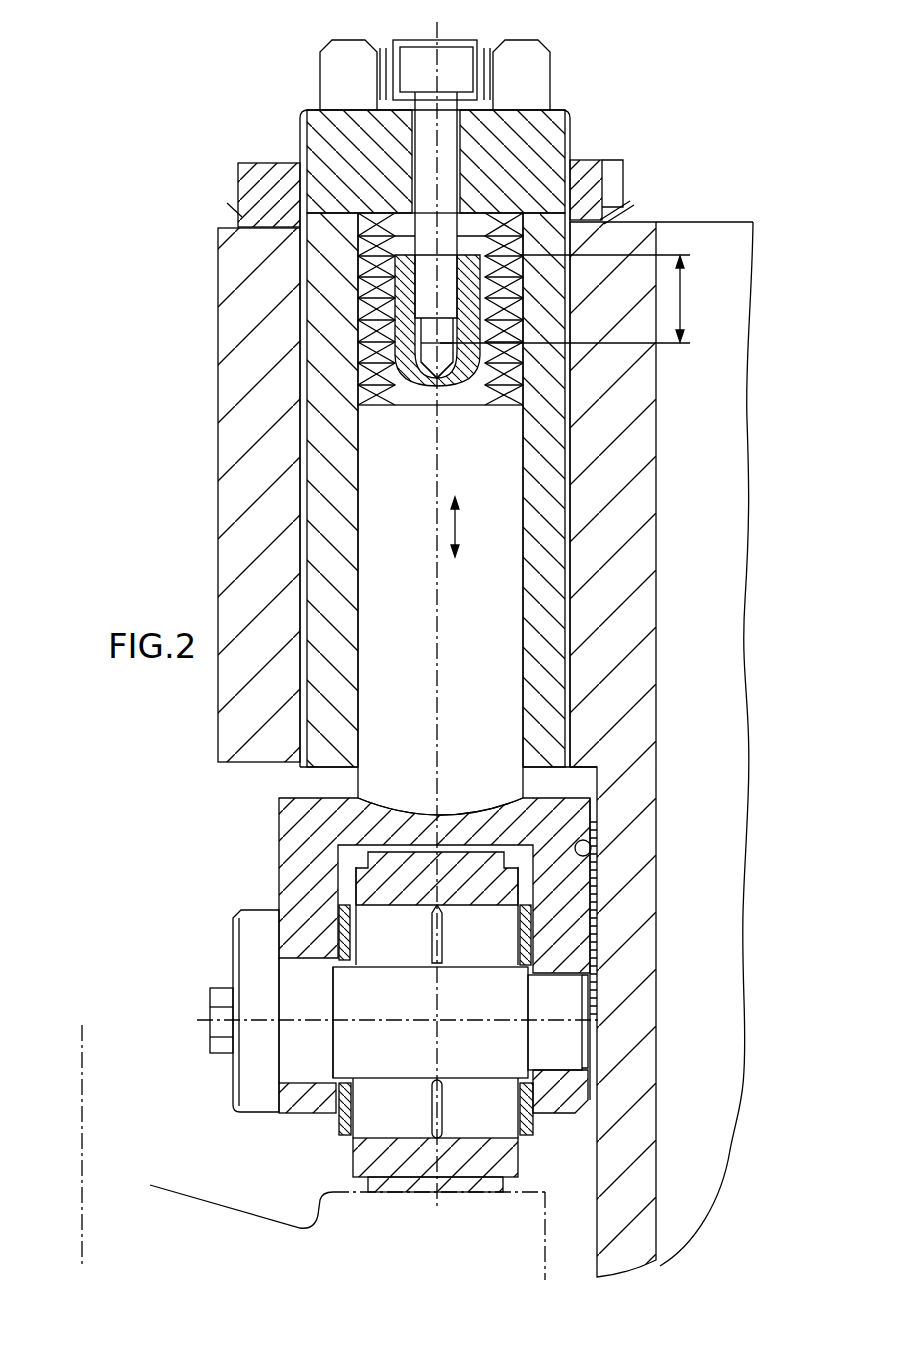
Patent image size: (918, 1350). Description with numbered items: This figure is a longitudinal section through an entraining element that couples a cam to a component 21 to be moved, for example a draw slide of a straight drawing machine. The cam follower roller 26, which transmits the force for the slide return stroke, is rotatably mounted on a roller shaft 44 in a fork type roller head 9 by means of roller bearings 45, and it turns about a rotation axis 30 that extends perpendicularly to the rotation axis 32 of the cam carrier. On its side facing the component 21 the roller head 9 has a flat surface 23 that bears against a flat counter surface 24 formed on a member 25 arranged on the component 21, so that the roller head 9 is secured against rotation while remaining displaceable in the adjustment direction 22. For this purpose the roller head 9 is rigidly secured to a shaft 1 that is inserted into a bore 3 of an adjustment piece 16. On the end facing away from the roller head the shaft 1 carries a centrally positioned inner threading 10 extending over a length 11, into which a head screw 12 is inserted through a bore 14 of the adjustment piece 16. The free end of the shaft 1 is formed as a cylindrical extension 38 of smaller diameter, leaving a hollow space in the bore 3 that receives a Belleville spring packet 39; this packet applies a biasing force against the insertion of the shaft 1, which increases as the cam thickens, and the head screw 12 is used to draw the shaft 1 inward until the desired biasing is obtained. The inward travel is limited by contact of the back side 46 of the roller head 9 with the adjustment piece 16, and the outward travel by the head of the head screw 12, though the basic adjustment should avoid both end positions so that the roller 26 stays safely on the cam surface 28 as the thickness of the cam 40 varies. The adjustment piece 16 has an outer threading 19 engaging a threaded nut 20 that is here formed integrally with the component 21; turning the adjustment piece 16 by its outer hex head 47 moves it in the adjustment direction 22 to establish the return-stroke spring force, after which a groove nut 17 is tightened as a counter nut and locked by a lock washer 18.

The shaft 1 is at (377, 512).
The bore 3 is at (358, 290).
The roller head 9 is at (242, 884).
The inner threading 10 is at (420, 343).
The length 11 is at (683, 303).
The head screw 12 is at (450, 123).
The bore 14 is at (407, 133).
The adjustment piece 16 is at (320, 457).
The groove nut 17 is at (593, 165).
The lock washer 18 is at (606, 220).
The outer threading 19 is at (303, 772).
The threaded nut 20 is at (240, 255).
The component to be moved 21 is at (742, 292).
The adjustment direction 22 is at (479, 527).
The flat surface 23 is at (597, 805).
The counter surface 24 is at (598, 858).
The member 25 is at (597, 922).
The roller 26 is at (353, 1157).
The cam surface 28 is at (318, 1186).
The rotation axis 30 is at (343, 1020).
The rotation axis 32 is at (82, 1057).
The cylindrical extension 38 is at (470, 388).
The Belleville spring packet 39 is at (507, 355).
The cam 40 is at (405, 1238).
The roller shaft 44 is at (492, 1010).
The roller bearings 45 is at (500, 1123).
The back side 46 is at (297, 790).
The outer hex head 47 is at (338, 57).